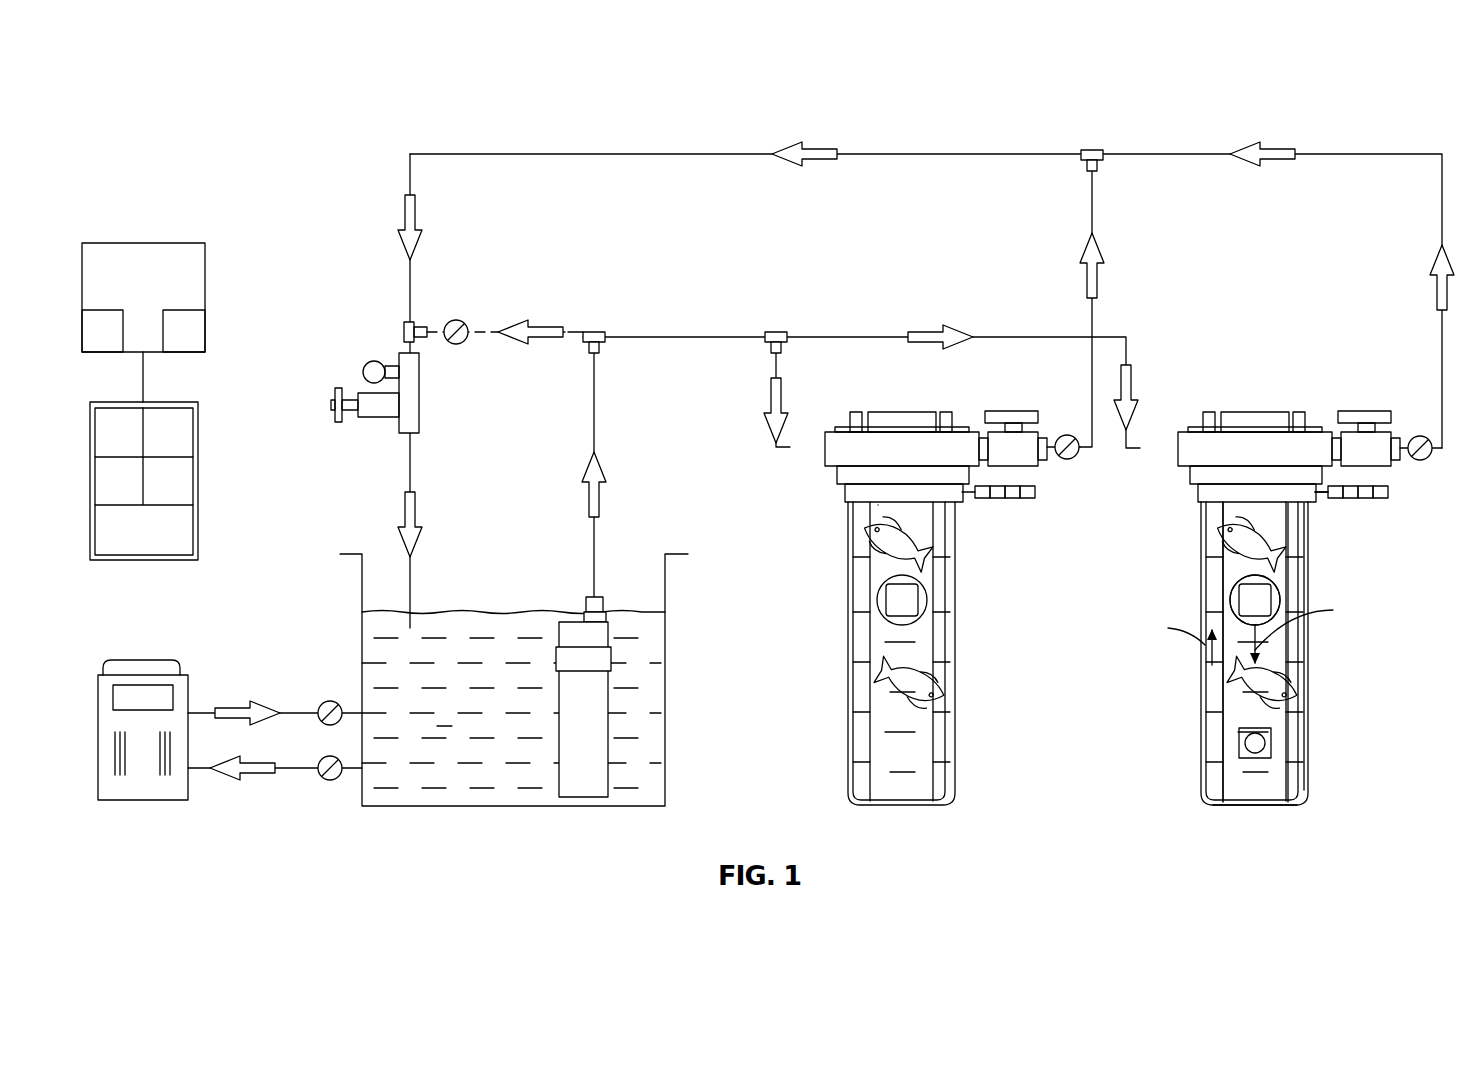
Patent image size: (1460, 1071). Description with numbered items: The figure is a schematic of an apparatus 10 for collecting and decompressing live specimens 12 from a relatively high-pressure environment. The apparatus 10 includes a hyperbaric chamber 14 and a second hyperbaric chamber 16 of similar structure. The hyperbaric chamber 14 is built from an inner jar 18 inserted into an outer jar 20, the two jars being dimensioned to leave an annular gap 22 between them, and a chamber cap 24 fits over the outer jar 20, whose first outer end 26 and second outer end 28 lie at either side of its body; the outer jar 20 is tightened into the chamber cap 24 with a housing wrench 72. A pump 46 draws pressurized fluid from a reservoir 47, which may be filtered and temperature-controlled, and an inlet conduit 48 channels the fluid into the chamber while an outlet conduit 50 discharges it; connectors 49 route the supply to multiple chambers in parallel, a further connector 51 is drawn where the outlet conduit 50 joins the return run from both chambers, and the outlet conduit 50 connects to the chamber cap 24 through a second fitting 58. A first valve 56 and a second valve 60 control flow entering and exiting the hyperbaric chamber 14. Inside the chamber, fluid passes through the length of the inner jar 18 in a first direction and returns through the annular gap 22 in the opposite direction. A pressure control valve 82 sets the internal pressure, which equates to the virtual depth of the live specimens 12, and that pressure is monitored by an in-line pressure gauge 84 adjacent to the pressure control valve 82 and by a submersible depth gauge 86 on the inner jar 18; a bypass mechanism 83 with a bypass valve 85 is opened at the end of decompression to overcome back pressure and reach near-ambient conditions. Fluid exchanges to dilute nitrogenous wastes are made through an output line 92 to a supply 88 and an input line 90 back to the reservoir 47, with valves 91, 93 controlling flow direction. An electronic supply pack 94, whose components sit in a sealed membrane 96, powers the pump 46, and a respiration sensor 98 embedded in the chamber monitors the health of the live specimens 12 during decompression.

The apparatus 10 is at (340, 115).
The live specimens 12 is at (930, 710).
The hyperbaric chamber 14 is at (1265, 585).
The second hyperbaric chamber 16 is at (999, 608).
The inner jar 18 is at (1288, 783).
The outer jar 20 is at (1307, 757).
The annular gap 22 is at (1298, 710).
The chamber cap 24 is at (1257, 398).
The first outer end 26 is at (1178, 490).
The second outer end 28 is at (1193, 790).
The pump 46 is at (608, 723).
The reservoir 47 is at (460, 815).
The inlet conduit 48 is at (594, 433).
The connectors 49 is at (777, 360).
The outlet conduit 50 is at (525, 154).
The tee fitting 51 is at (1092, 205).
The first valve 56 is at (1178, 475).
The second fitting 58 is at (1360, 408).
The second valve 60 is at (1420, 462).
The housing wrench 72 is at (1355, 500).
The pressure control valve 82 is at (362, 403).
The bypass mechanism 83 is at (493, 346).
The in-line pressure gauge 84 is at (370, 350).
The bypass valve 85 is at (455, 345).
The submersible depth gauge 86 is at (1283, 602).
The supply 88 is at (143, 815).
The input line 90 is at (275, 686).
The valve 91 is at (330, 700).
The output line 92 is at (275, 798).
The valve 93 is at (330, 780).
The electronic supply pack 94 is at (176, 401).
The sealed membrane 96 is at (198, 480).
The respiration sensor 98 is at (1238, 745).